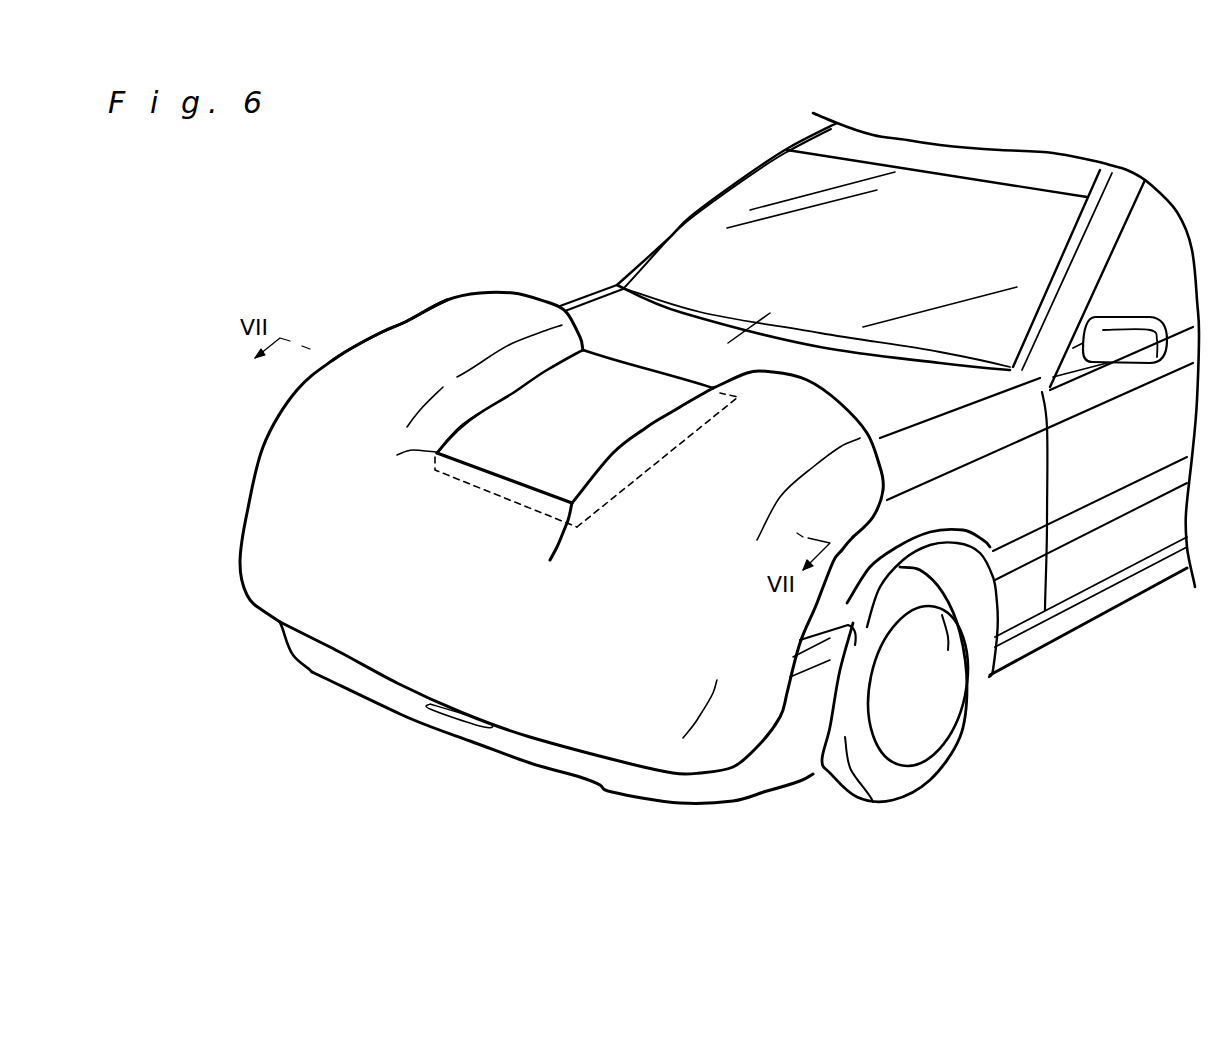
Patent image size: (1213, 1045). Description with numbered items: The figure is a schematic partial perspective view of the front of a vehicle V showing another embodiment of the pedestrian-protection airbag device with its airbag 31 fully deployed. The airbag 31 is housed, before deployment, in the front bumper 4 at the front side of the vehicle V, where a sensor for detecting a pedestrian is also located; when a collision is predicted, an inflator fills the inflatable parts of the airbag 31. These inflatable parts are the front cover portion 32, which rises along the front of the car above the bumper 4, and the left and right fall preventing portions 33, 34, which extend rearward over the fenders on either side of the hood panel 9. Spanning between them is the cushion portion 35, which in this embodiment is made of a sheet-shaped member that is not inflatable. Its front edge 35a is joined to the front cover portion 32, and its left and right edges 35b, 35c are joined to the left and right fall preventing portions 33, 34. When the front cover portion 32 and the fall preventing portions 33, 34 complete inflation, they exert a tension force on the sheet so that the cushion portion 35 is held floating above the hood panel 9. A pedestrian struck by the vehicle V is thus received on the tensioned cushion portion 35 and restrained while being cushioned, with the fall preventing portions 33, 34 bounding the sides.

The front bumper 4 is at (535, 753).
The hood panel 9 is at (728, 343).
The airbag 31 is at (228, 433).
The front cover portion 32 is at (417, 633).
The left fall preventing portion 33 is at (793, 397).
The right fall preventing portion 34 is at (403, 347).
The cushion portion 35 is at (623, 382).
The front edge 35a is at (492, 490).
The left edge 35b is at (672, 452).
The right edge 35c is at (490, 405).
The vehicle V is at (700, 180).